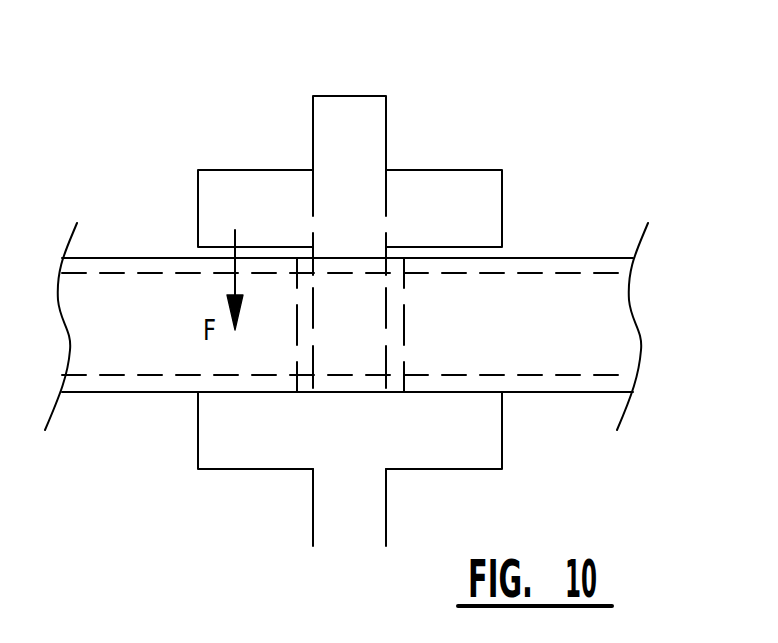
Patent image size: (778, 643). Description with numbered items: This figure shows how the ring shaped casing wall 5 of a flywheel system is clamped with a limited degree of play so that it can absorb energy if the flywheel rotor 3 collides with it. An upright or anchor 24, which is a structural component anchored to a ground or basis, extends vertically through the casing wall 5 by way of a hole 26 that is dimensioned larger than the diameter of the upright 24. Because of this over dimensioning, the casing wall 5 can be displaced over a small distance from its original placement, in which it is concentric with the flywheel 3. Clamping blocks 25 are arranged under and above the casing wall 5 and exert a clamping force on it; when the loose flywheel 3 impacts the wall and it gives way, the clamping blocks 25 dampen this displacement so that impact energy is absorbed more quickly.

The flywheel rotor 3 is at (597, 318).
The casing wall 5 is at (573, 262).
The uprights or anchors 24 is at (368, 497).
The clamping blocks 25 is at (442, 186).
The hole 26 is at (403, 318).